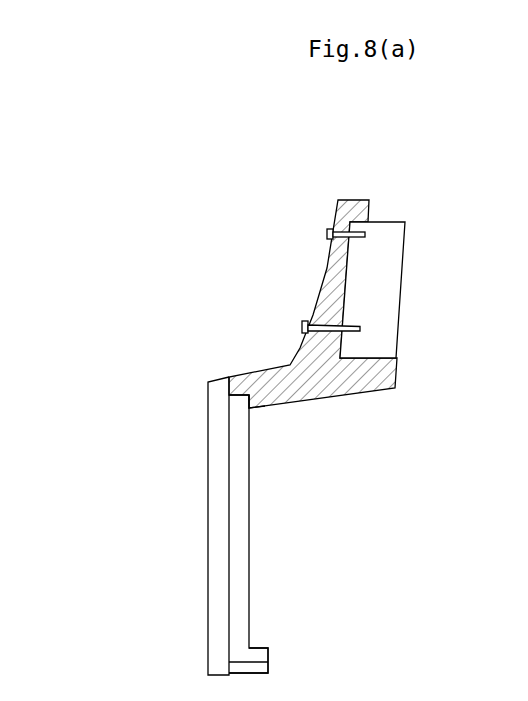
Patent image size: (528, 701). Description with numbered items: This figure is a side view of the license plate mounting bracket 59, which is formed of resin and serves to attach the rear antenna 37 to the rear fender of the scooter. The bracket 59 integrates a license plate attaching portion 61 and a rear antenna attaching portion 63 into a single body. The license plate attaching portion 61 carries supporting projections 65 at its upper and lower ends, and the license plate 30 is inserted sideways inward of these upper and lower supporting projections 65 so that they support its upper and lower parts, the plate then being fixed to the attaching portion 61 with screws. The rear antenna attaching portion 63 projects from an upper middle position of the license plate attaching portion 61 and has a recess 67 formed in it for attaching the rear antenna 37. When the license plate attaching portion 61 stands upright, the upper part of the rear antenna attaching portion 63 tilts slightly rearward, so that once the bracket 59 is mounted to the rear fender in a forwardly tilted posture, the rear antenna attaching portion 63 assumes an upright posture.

The license plate 30 is at (249, 510).
The rear antenna 37 is at (393, 288).
The license plate mounting bracket 59 is at (213, 285).
The license plate attaching portion 61 is at (206, 434).
The rear antenna attaching portion 63 is at (283, 360).
The supporting projections 65 is at (250, 408).
The recess 67 is at (373, 353).